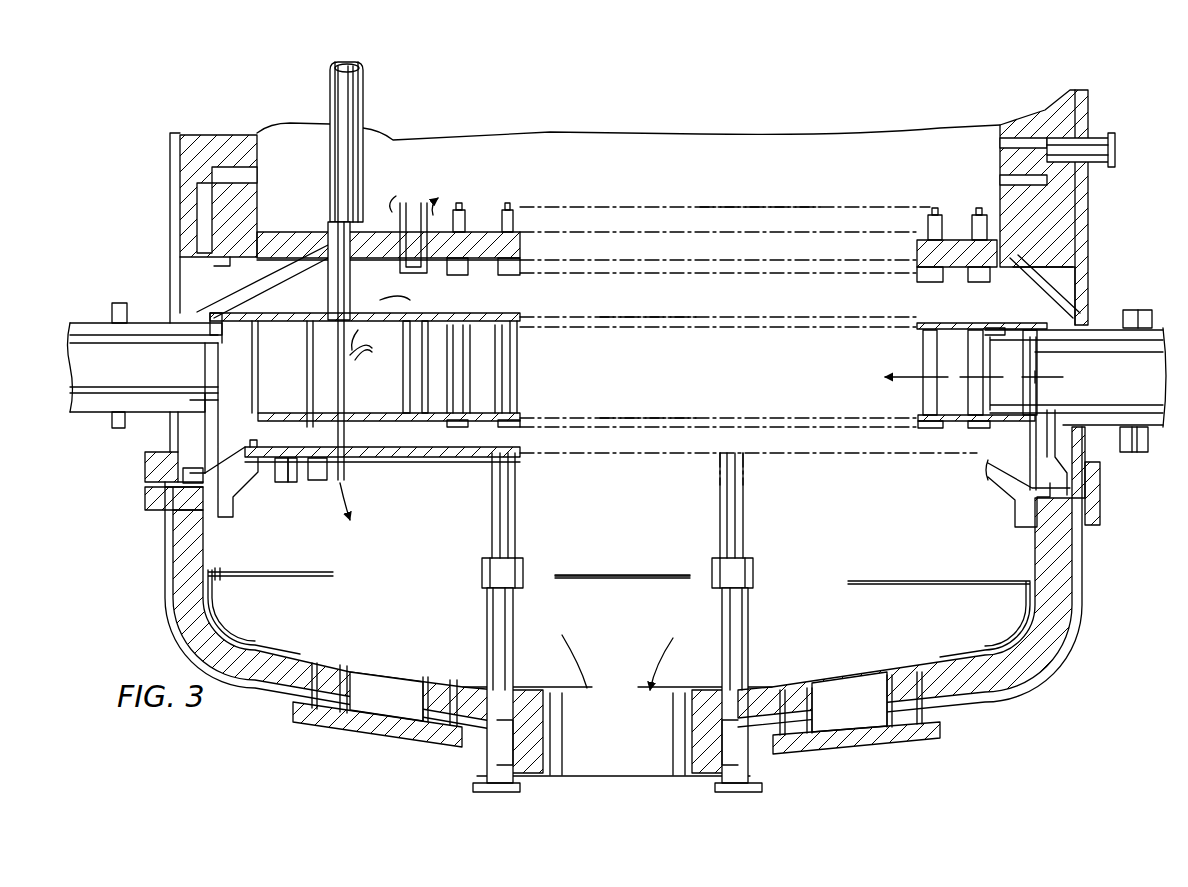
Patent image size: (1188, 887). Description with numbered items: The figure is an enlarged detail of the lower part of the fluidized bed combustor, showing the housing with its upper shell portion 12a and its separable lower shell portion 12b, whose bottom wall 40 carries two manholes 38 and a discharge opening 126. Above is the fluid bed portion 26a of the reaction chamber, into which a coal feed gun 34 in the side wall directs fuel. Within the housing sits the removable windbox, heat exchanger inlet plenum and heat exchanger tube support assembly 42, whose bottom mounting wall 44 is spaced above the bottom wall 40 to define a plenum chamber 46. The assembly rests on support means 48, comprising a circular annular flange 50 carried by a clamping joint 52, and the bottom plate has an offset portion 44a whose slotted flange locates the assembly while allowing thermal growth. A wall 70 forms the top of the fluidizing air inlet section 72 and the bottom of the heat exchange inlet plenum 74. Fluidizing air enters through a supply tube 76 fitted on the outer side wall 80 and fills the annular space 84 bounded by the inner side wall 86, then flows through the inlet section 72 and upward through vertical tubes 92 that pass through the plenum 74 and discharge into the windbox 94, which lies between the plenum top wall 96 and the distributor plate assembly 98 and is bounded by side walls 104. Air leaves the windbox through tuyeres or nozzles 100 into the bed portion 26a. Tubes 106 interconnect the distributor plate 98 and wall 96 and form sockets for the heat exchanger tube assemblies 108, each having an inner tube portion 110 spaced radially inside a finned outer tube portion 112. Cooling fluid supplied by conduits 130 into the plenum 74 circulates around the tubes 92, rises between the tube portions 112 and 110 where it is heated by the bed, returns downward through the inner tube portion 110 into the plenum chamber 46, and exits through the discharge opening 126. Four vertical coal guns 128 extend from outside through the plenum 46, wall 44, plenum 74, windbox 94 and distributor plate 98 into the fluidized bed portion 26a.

The upper shell portion 12a is at (1086, 212).
The lower shell portion 12b is at (1070, 590).
The fluid bed portion 26a is at (760, 181).
The coal feed gun 34 is at (1105, 133).
The manhole 38 is at (403, 733).
The bottom wall 40 is at (280, 657).
The removable windbox, heat exchanger inlet plenum and heat exchanger tube support a 42 is at (310, 150).
The bottom mounting wall 44 is at (311, 462).
The offset portion 44a is at (240, 470).
The plenum chamber 46 is at (622, 542).
The support means 48 is at (150, 467).
The circular annular flange 50 is at (147, 498).
The clamping joint 52 is at (165, 520).
The wall 70 is at (462, 468).
The fluidizing air inlet section 72 is at (523, 443).
The heat exchange inlet plenum 74 is at (650, 380).
The fluidizing air supply tube 76 is at (138, 305).
The outer side wall 80 is at (275, 432).
The annular space 84 is at (240, 332).
The inner side wall 86 is at (247, 410).
The vertical pipes or tubes 92 is at (500, 380).
The windbox 94 is at (650, 301).
The top wall 96 is at (406, 280).
The distributor plate assembly 98 is at (482, 234).
The tuyeres or nozzles 100 is at (417, 220).
The side walls 104 is at (305, 212).
The tubes 106 is at (330, 290).
The heat exchanger tube assemblies 108 is at (366, 118).
The inner tube portion 110 is at (355, 420).
The outer tube portion 112 is at (360, 92).
The discharge opening 126 is at (645, 762).
The coal guns 128 is at (497, 627).
The conduits 130 is at (1165, 285).